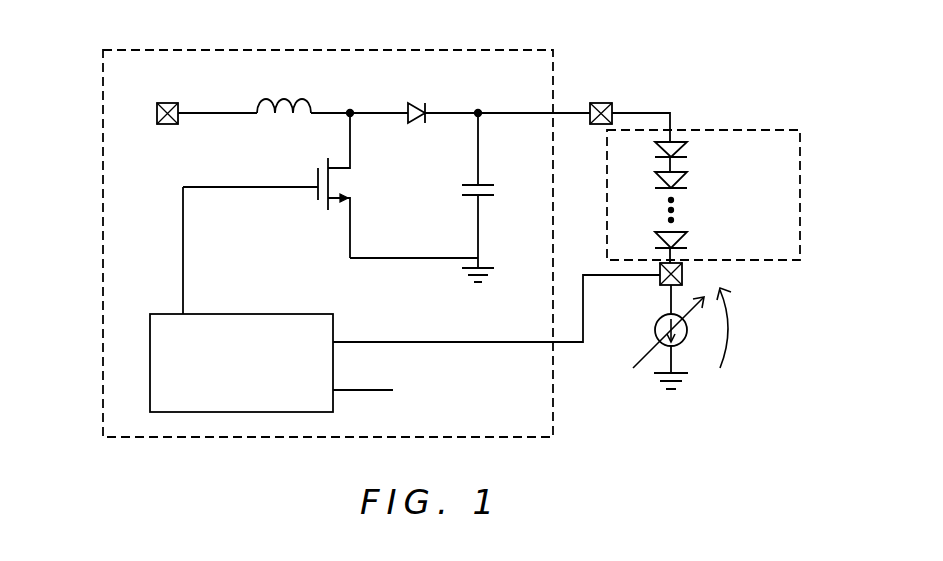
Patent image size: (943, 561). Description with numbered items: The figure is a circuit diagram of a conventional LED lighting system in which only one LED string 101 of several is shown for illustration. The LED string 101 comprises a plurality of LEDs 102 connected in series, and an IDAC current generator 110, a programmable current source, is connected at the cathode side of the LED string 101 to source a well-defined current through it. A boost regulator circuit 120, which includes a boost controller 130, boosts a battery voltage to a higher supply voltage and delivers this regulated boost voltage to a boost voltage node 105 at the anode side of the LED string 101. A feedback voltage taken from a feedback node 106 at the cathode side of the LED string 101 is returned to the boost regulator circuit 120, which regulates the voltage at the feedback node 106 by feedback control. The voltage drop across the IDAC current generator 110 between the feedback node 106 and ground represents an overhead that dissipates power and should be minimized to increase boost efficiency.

The boost regulator circuit 120 is at (494, 49).
The boost controller 130 is at (287, 312).
The boost voltage node 105 is at (614, 108).
The LED string 101 is at (800, 226).
The LED 102 is at (650, 143).
The feedback node 106 is at (683, 273).
The IDAC current generator 110 is at (687, 342).